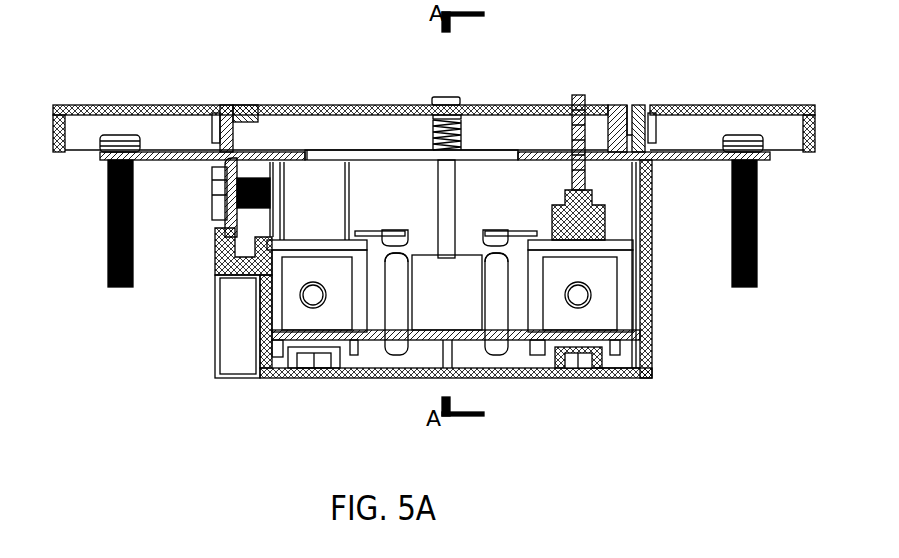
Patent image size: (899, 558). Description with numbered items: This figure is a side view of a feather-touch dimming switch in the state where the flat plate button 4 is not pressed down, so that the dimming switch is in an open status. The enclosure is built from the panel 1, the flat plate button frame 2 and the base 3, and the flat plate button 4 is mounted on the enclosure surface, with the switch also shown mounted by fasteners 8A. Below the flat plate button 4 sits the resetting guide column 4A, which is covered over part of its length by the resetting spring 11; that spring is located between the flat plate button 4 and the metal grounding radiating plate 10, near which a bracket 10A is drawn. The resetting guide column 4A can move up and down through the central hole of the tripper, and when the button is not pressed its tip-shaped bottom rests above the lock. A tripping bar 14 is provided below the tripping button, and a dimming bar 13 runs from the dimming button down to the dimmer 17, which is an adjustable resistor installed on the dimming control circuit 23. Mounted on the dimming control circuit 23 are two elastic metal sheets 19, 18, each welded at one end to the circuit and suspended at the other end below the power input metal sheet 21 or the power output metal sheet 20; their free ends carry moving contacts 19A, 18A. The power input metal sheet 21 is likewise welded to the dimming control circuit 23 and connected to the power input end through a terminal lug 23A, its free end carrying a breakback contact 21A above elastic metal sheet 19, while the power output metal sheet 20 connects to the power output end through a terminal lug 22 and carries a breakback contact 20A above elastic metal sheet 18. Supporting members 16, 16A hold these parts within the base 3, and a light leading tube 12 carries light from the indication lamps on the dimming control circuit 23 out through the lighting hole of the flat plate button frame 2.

The panel 1 is at (697, 107).
The flat plate button frame 2 is at (630, 105).
The base 3 is at (540, 380).
The flat plate button 4 is at (290, 105).
The resetting guide column 4A is at (442, 182).
The bolt 8A is at (107, 221).
The metal grounding radiating plate 10 is at (795, 156).
The bracket 10A is at (213, 187).
The resetting spring 11 is at (460, 148).
The light leading tube 12 is at (293, 201).
The dimming bar 13 is at (578, 96).
The tripping bar 14 is at (447, 96).
The shelf 16 is at (615, 246).
The side member 16A is at (243, 279).
The dimmer 17 is at (593, 220).
The elastic metal sheet 18 is at (518, 372).
The moving contact 18A is at (487, 254).
The elastic metal sheet 19 is at (397, 305).
The moving contact 19A is at (408, 266).
The power output metal sheet 20 is at (515, 232).
The breakback contact 20A is at (490, 232).
The power input metal sheet 21 is at (363, 231).
The breakback contact 21A is at (407, 230).
The terminal lug 22 is at (620, 380).
The dimming control circuit 23 is at (640, 336).
The terminal lug 23A is at (278, 357).